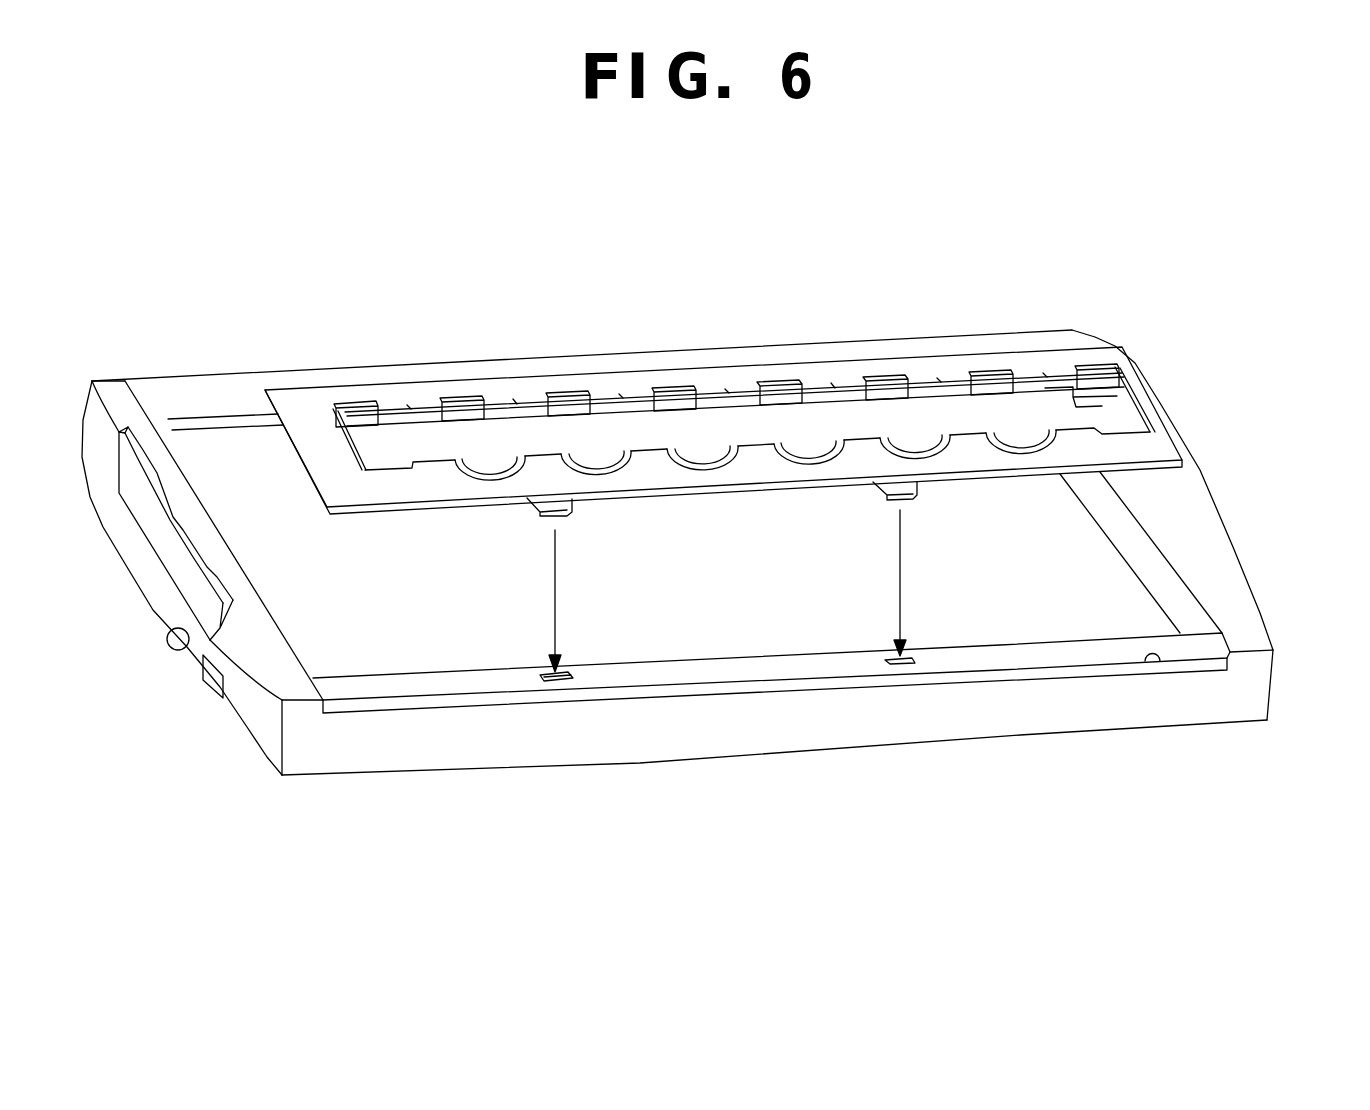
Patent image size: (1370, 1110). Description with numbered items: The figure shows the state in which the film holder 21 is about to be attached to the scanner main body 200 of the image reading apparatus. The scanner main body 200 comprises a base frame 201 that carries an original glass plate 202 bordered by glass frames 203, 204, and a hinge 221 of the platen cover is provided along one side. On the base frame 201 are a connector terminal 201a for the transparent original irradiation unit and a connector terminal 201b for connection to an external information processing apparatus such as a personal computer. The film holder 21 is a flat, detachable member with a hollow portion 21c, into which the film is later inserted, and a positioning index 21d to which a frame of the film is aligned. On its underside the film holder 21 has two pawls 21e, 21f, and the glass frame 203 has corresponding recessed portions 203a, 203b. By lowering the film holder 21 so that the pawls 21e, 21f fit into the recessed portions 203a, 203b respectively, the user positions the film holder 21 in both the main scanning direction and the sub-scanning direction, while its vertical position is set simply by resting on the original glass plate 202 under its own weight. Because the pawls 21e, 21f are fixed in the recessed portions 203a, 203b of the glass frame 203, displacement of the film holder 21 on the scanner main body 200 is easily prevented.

The scanner main body 200 is at (1237, 434).
The base frame 201 is at (1237, 595).
The connector terminal 201a is at (180, 648).
The connector terminal 201b is at (207, 695).
The original glass plate 202 is at (222, 442).
The glass frame 203 is at (1161, 665).
The recessed portion 203a is at (908, 667).
The recessed portion 203b is at (565, 683).
The glass frame 204 is at (262, 384).
The hinge of the platen cover 221 is at (123, 428).
The film holder 21 is at (1103, 352).
The hollow portion 21c is at (500, 442).
The positioning index 21d is at (622, 402).
The pawl 21e is at (913, 502).
The pawl 21f is at (562, 517).